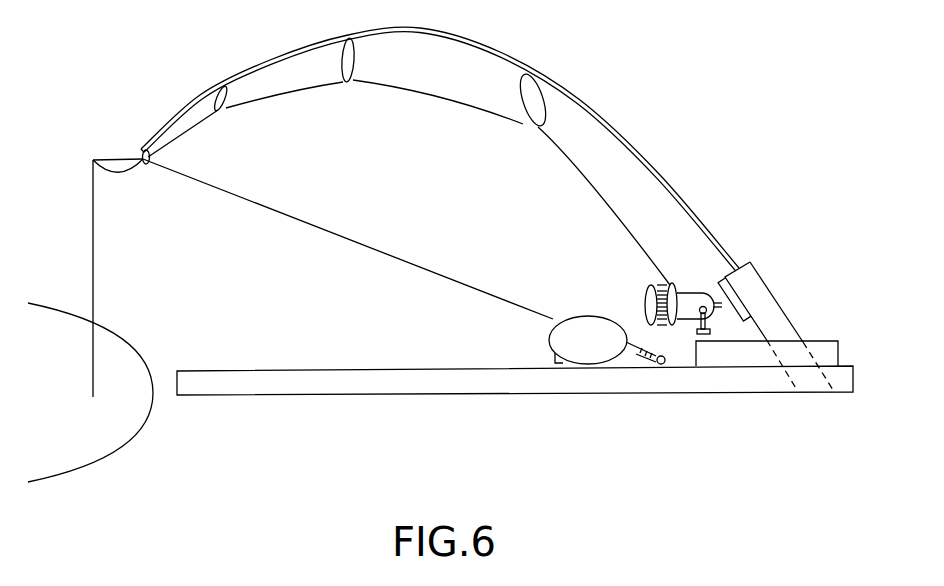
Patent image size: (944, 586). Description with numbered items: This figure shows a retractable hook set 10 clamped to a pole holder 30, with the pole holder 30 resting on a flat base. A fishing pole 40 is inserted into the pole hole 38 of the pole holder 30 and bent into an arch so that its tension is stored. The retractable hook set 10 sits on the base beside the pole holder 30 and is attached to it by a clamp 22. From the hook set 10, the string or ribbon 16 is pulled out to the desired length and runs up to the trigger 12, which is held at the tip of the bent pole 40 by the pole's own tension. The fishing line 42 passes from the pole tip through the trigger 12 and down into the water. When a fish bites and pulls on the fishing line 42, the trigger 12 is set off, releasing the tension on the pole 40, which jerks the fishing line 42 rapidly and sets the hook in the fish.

The retractable hook set 10 is at (537, 342).
The trigger 12 is at (107, 149).
The string or ribbon 16 is at (275, 216).
The clamp 22 is at (659, 364).
The pole holder 30 is at (555, 408).
The pole hole 38 is at (800, 357).
The fishing pole 40 is at (680, 160).
The fishing line 42 is at (92, 237).